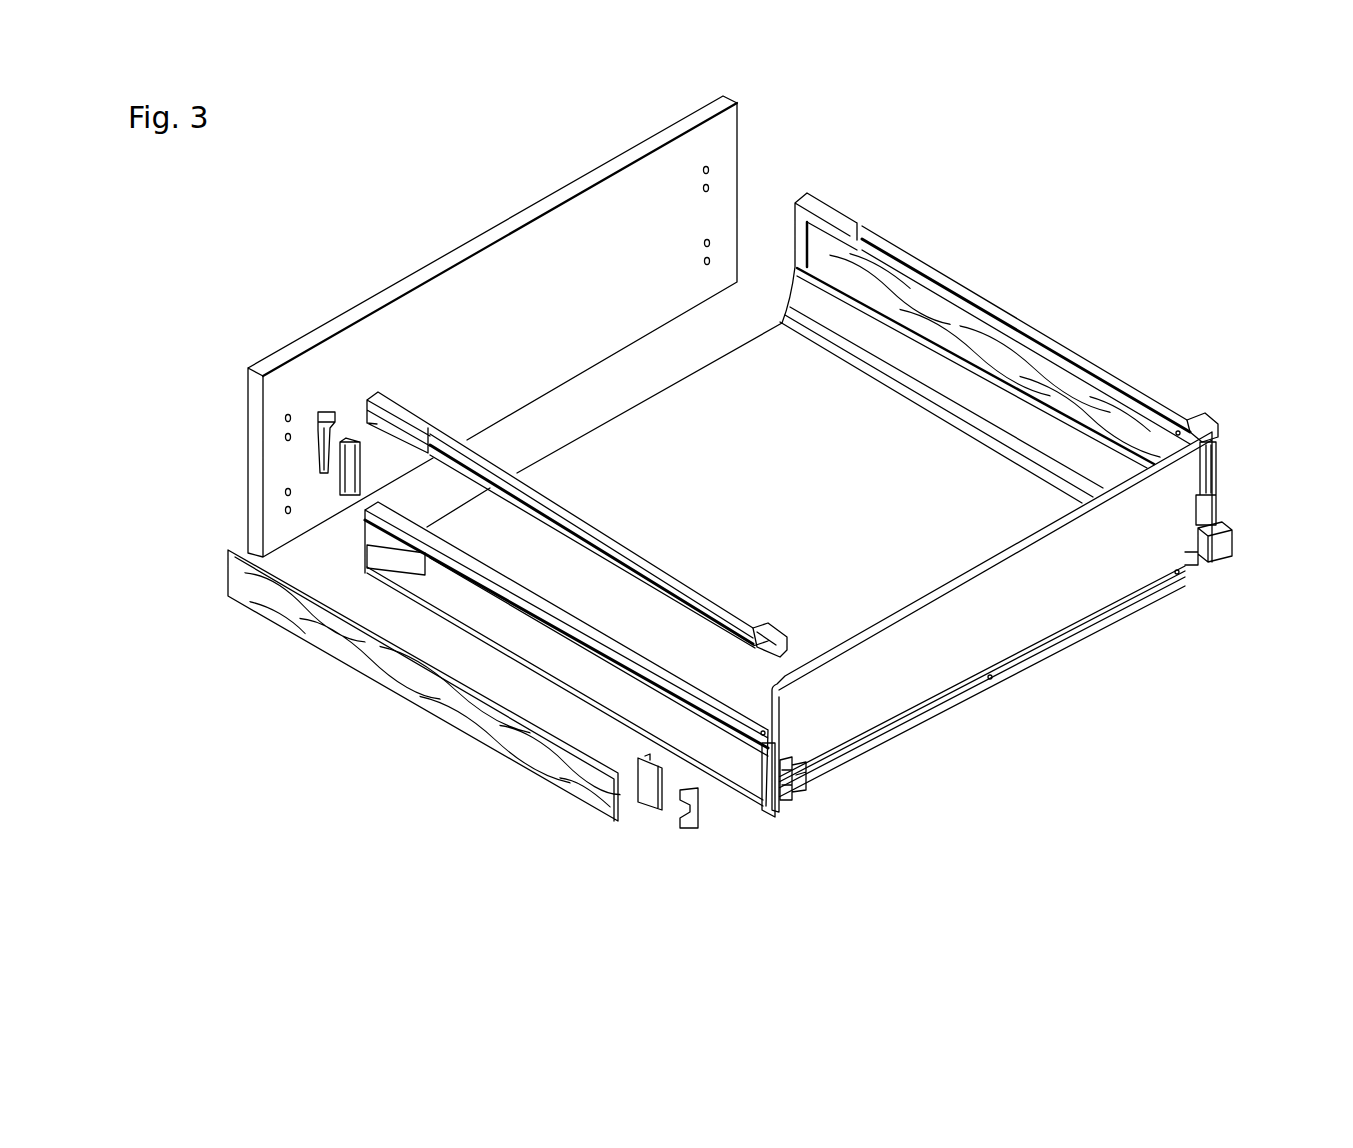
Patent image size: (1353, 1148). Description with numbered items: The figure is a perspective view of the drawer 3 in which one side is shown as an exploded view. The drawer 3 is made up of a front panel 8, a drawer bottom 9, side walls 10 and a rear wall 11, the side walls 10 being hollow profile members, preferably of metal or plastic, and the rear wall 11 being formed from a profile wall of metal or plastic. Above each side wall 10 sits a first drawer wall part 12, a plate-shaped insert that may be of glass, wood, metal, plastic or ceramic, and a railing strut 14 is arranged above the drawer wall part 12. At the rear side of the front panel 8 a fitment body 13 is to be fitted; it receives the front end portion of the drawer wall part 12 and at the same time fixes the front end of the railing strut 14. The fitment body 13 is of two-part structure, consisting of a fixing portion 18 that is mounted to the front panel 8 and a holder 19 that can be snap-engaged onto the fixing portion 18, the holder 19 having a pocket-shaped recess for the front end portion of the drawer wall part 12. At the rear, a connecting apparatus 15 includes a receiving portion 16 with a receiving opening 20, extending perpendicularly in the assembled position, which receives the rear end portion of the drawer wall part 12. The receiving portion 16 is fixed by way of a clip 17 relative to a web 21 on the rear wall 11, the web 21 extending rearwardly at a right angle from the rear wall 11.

The drawer 3 is at (1102, 656).
The front panel 8 is at (492, 233).
The drawer bottom 9 is at (786, 498).
The side walls 10 is at (962, 387).
The rear wall 11 is at (982, 650).
The first drawer wall part 12 is at (883, 287).
The fitment body 13 is at (322, 493).
The railing strut 14 is at (1007, 317).
The connecting apparatus 15 is at (669, 835).
The receiving portion 16 is at (653, 803).
The clip 17 is at (700, 812).
The fixing portion 18 is at (322, 433).
The holder 19 is at (350, 443).
The receiving opening 20 is at (638, 750).
The web 21 is at (777, 720).